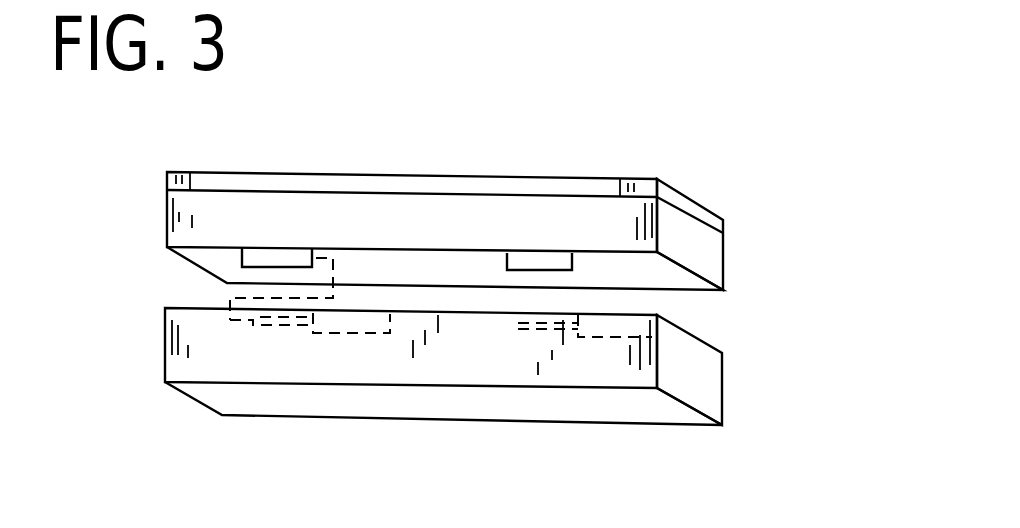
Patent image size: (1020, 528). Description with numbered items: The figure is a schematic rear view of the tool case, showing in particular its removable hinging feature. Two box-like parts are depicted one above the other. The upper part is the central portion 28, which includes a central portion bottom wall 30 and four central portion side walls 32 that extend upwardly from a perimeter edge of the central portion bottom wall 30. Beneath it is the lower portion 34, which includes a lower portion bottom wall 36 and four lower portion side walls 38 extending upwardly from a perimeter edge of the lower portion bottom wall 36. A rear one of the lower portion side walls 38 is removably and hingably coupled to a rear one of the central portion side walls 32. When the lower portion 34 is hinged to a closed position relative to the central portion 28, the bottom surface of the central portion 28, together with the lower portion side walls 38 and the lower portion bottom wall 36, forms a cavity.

The central portion 28 is at (710, 263).
The central portion bottom wall 30 is at (677, 277).
The central portion side walls 32 is at (177, 222).
The lower portion 34 is at (703, 388).
The lower portion bottom wall 36 is at (642, 407).
The lower portion side walls 38 is at (178, 330).